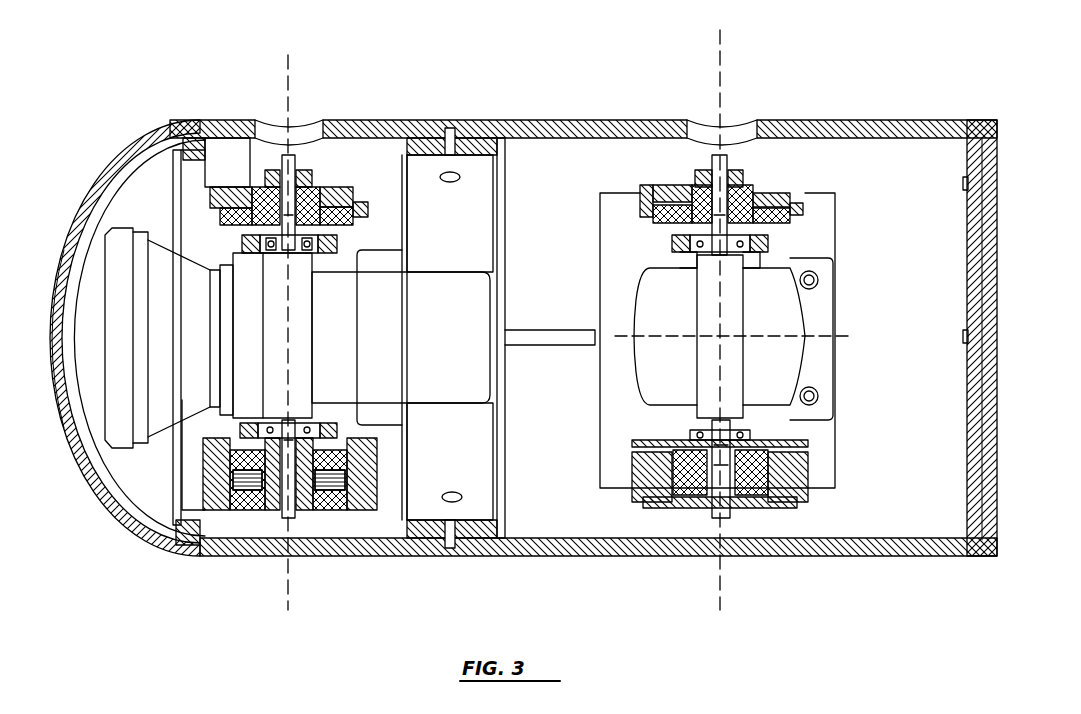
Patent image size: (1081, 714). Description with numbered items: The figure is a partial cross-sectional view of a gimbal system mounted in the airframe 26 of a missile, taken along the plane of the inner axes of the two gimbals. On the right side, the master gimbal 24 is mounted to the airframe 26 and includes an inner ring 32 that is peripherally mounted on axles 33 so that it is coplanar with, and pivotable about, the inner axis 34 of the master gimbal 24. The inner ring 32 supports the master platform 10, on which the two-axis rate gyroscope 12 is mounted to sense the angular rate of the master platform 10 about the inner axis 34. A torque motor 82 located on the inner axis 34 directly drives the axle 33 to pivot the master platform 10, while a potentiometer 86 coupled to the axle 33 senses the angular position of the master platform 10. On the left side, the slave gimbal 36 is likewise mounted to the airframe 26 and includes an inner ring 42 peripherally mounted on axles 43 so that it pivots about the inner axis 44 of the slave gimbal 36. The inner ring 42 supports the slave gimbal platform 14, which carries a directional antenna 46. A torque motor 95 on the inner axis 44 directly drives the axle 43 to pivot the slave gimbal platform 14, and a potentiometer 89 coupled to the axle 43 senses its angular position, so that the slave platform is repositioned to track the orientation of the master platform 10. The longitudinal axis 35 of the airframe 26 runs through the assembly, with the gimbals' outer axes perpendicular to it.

The master platform 10 is at (731, 372).
The two-axis rate gyroscope 12 is at (778, 270).
The slave gimbal platform 14 is at (297, 364).
The master gimbal 24 is at (630, 180).
The airframe 26 is at (569, 121).
The inner ring 32 is at (640, 205).
The axles 33 is at (711, 160).
The inner axis 34 is at (722, 66).
The longitudinal axis 35 is at (1062, 342).
The slave gimbal 36 is at (238, 247).
The inner ring 42 is at (222, 204).
The axles 43 is at (296, 158).
The inner axis 44 is at (296, 80).
The directional antenna 46 is at (404, 369).
The torque motor 82 is at (760, 495).
The potentiometer 86 is at (752, 195).
The potentiometer 89 is at (262, 190).
The torque motor 95 is at (245, 505).